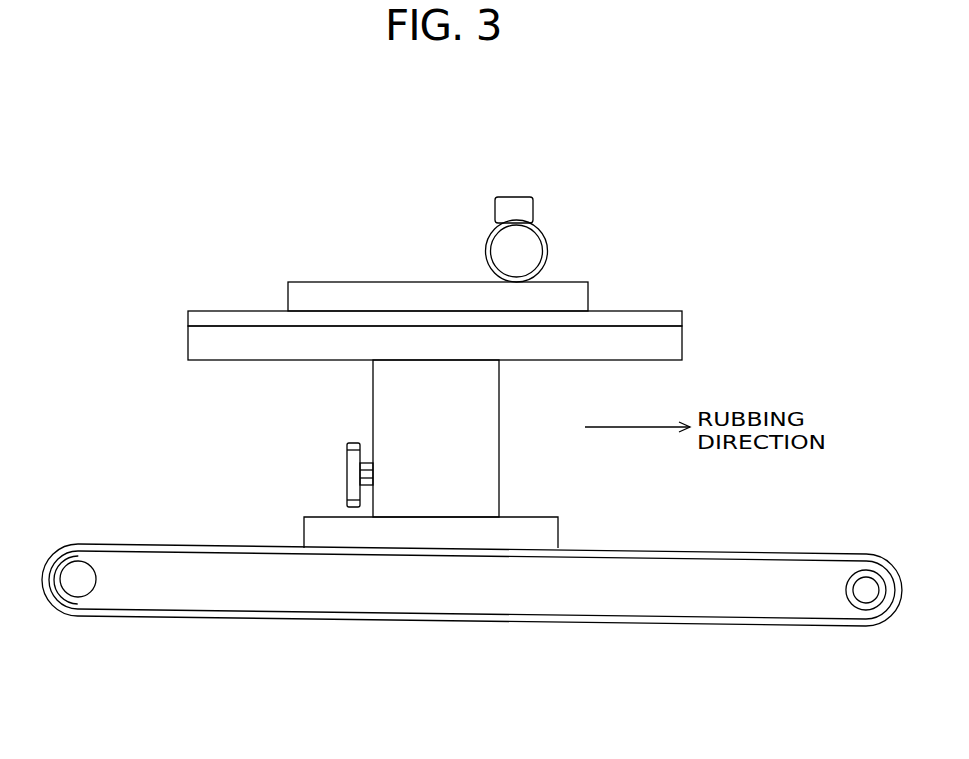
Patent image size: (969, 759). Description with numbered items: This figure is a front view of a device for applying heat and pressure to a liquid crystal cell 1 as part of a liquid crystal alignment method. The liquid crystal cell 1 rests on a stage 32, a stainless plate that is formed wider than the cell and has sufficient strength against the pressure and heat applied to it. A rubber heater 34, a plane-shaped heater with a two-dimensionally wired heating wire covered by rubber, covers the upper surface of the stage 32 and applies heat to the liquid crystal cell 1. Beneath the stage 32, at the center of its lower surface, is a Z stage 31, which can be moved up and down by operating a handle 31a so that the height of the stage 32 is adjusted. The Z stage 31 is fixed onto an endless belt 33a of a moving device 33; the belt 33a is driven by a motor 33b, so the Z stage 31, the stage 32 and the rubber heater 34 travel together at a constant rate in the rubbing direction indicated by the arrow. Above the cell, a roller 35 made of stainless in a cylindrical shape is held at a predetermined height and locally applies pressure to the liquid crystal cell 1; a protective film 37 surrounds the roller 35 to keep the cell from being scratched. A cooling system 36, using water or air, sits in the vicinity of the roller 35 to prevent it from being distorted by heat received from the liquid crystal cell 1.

The liquid crystal cell 1 is at (313, 282).
The Z stage 31 is at (371, 422).
The handle 31a is at (347, 478).
The stage 32 is at (188, 351).
The moving device 33 is at (471, 592).
The endless belt 33a is at (472, 623).
The motor 33b is at (866, 644).
The rubber heater 34 is at (224, 311).
The roller 35 is at (548, 252).
The cooling system 36 is at (533, 205).
The protective film 37 is at (493, 233).